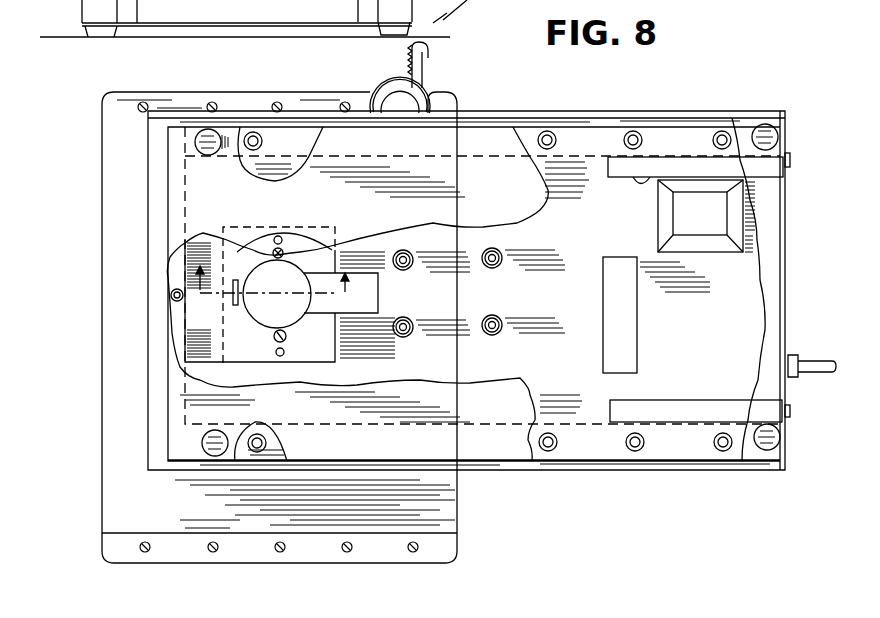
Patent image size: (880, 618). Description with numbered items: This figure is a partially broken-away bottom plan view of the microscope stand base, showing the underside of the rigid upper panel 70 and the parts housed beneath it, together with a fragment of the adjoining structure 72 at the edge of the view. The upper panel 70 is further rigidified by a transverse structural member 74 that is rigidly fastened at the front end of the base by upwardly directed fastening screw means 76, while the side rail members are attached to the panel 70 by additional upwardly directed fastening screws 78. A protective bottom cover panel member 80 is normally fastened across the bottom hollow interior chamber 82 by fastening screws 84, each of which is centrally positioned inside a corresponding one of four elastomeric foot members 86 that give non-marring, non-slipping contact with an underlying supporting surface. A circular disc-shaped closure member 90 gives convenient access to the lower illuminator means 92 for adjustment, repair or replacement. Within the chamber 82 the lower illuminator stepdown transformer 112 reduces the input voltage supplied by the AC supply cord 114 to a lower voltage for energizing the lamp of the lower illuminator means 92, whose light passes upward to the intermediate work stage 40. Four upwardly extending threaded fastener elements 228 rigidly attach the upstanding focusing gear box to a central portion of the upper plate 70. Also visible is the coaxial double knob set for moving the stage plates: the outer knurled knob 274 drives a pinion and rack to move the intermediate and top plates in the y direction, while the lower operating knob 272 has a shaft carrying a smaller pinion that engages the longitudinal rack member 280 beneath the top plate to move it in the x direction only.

The intermediate work stage 40 is at (97, 410).
The upper panel 70 is at (733, 110).
The housing 72 is at (80, 4).
The transverse structural member 74 is at (167, 230).
The fastening screw means 76 is at (171, 295).
The fastening screws 78 is at (260, 135).
The bottom cover panel member 80 is at (480, 445).
The bottom hollow interior chamber 82 is at (567, 230).
The fastening screws 84 is at (767, 124).
The elastomeric foot members 86 is at (208, 130).
The circular disc-shaped closure member 90 is at (293, 243).
The lower illuminator means 92 is at (262, 342).
The lower illuminator means stepdown transformer 112 is at (752, 242).
The AC supply cord 114 is at (808, 380).
The threaded fastener elements 228 is at (503, 329).
The lower operating knob 272 is at (432, 94).
The outer knurled knob 274 is at (385, 83).
The longitudinal rack member 280 is at (415, 100).